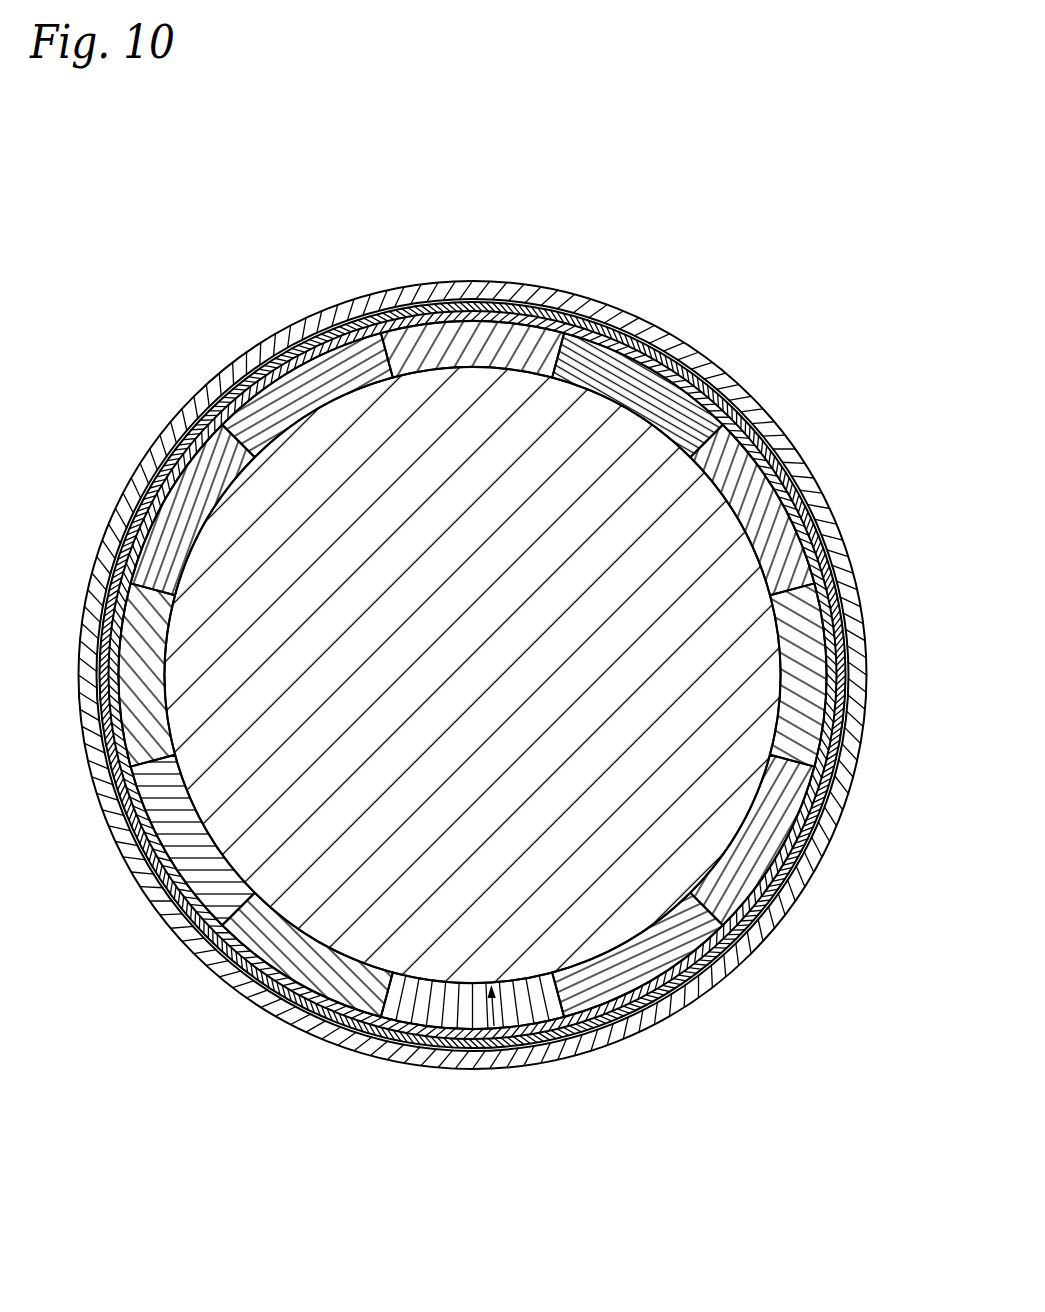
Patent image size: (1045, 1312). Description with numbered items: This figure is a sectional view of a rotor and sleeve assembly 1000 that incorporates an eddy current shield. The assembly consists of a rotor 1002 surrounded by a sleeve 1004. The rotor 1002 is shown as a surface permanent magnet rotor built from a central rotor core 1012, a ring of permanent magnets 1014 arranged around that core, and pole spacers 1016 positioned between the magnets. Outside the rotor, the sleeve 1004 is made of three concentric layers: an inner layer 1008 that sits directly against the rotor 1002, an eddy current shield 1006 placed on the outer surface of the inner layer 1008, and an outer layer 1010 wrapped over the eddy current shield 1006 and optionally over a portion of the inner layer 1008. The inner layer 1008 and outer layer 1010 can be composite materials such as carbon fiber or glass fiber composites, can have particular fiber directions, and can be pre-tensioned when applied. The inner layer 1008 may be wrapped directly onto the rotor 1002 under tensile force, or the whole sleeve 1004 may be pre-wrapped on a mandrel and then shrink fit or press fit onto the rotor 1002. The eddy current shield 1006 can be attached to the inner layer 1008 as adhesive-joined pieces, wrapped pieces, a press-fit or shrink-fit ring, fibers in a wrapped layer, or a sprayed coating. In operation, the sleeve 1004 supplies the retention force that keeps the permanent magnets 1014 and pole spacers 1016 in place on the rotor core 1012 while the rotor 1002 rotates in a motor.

The rotor and sleeve assembly 1000 is at (722, 236).
The rotor 1002 is at (496, 1030).
The sleeve 1004 is at (128, 248).
The eddy current shield 1006 is at (279, 354).
The inner layer 1008 is at (248, 374).
The outer layer 1010 is at (291, 326).
The rotor core 1012 is at (368, 930).
The permanent magnets 1014 is at (698, 410).
The pole spacers 1016 is at (808, 615).